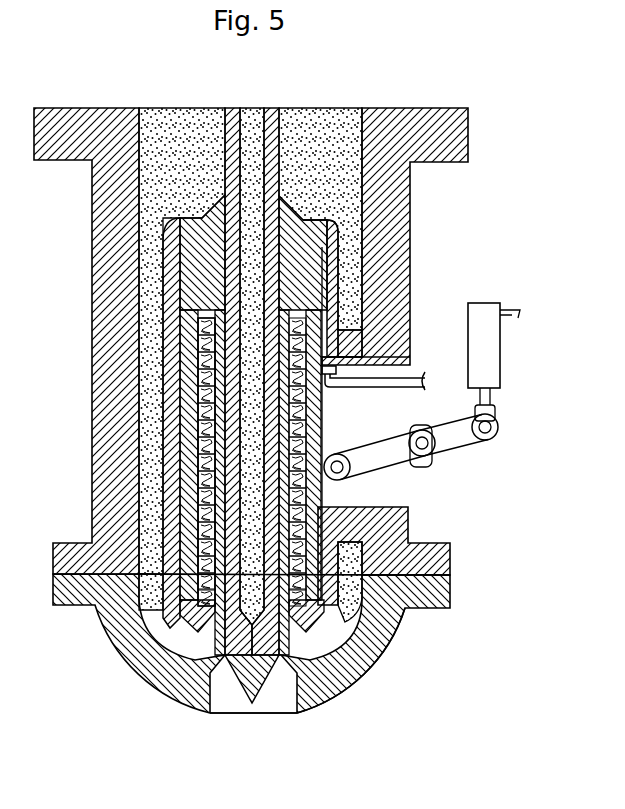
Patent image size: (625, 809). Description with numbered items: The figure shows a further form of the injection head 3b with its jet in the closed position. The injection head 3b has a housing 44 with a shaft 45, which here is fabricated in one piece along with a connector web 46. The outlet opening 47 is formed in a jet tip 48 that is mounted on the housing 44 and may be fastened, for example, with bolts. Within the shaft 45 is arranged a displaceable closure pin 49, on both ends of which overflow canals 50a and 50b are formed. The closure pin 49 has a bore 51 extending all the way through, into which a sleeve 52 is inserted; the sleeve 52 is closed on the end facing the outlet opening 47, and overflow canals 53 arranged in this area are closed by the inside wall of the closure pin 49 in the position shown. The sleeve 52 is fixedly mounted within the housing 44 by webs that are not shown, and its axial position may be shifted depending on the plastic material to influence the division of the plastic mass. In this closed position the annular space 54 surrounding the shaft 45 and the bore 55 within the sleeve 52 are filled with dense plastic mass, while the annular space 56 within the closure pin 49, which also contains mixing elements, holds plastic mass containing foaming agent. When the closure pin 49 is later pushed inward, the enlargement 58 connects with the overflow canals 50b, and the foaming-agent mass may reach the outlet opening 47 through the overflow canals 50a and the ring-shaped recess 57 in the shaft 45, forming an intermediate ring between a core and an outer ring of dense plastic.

The injection head 3b is at (386, 656).
The housing 44 is at (396, 340).
The shaft 45 is at (175, 283).
The connector web 46 is at (347, 349).
The outlet opening 47 is at (273, 714).
The jet tip 48 is at (185, 695).
The closure pin 49 is at (190, 345).
The overflow canal 50a is at (370, 615).
The overflow canal 50b is at (188, 314).
The bore 51 is at (225, 217).
The sleeve 52 is at (232, 140).
The overflow canals 53 is at (250, 636).
The annular space 54 is at (145, 412).
The bore 55 is at (228, 445).
The annular space 56 is at (205, 380).
The ring-shaped recess 57 is at (170, 560).
The enlargement 58 is at (330, 248).